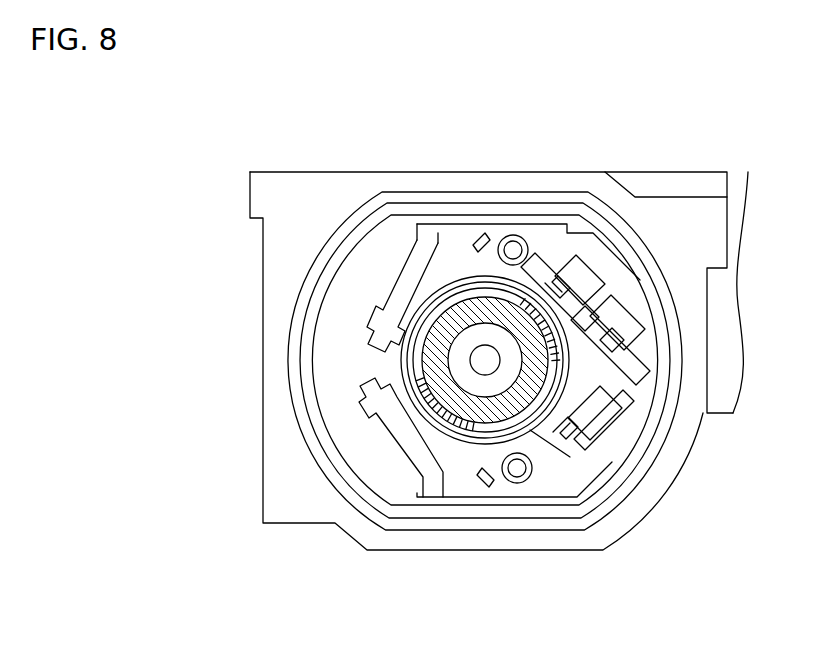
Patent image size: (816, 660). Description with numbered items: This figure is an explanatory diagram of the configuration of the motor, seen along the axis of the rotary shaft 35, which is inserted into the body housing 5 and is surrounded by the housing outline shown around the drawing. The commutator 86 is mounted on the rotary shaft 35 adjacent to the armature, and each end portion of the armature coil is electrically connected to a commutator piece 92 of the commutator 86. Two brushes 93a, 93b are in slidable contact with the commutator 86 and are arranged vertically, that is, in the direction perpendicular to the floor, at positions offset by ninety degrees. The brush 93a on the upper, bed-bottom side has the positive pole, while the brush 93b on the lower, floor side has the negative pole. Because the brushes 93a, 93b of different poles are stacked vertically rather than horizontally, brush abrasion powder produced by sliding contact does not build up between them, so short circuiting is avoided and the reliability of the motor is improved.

The body housing 5 is at (277, 253).
The rotary shaft 35 is at (484, 362).
The commutator 86 is at (446, 388).
The commutator piece 92 is at (481, 432).
The brush 93a is at (565, 268).
The brush 93b is at (587, 443).